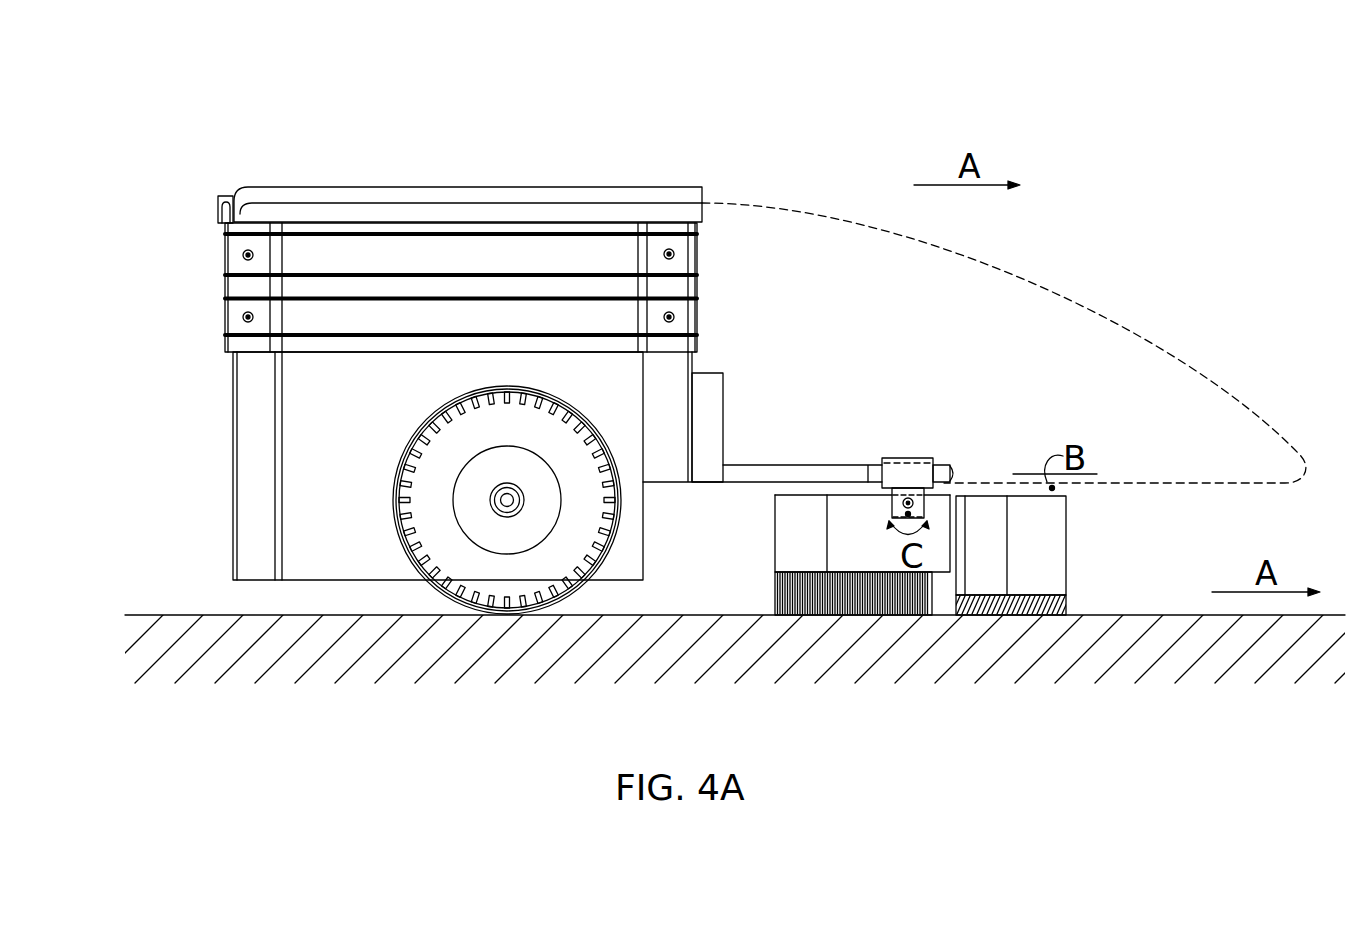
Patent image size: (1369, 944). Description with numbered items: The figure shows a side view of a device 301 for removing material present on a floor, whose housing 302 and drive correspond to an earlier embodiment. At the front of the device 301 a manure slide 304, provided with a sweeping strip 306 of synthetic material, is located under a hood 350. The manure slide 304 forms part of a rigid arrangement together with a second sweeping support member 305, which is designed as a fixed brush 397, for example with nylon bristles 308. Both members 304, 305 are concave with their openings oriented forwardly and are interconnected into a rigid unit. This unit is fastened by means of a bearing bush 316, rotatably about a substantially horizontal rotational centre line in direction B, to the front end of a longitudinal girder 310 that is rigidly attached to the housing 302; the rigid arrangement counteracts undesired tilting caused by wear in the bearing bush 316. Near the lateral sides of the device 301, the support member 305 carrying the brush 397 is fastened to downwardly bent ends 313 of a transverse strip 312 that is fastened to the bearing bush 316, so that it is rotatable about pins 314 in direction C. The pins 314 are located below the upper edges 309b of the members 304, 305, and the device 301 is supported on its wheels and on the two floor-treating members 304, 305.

The device 301 is at (280, 187).
The housing 302 is at (383, 417).
The manure slide 304 is at (998, 540).
The second sweeping support member 305 is at (793, 523).
The sweeping strip 306 is at (1067, 598).
The nylon bristles 308 is at (773, 600).
The upper edges 309b is at (803, 502).
The longitudinal girder 310 is at (757, 475).
The transverse strip 312 is at (908, 492).
The downwardly bent ends 313 is at (911, 514).
The pins 314 is at (913, 503).
The bearing bush 316 is at (909, 474).
The hood 350 is at (975, 245).
The fixed brush 397 is at (842, 560).